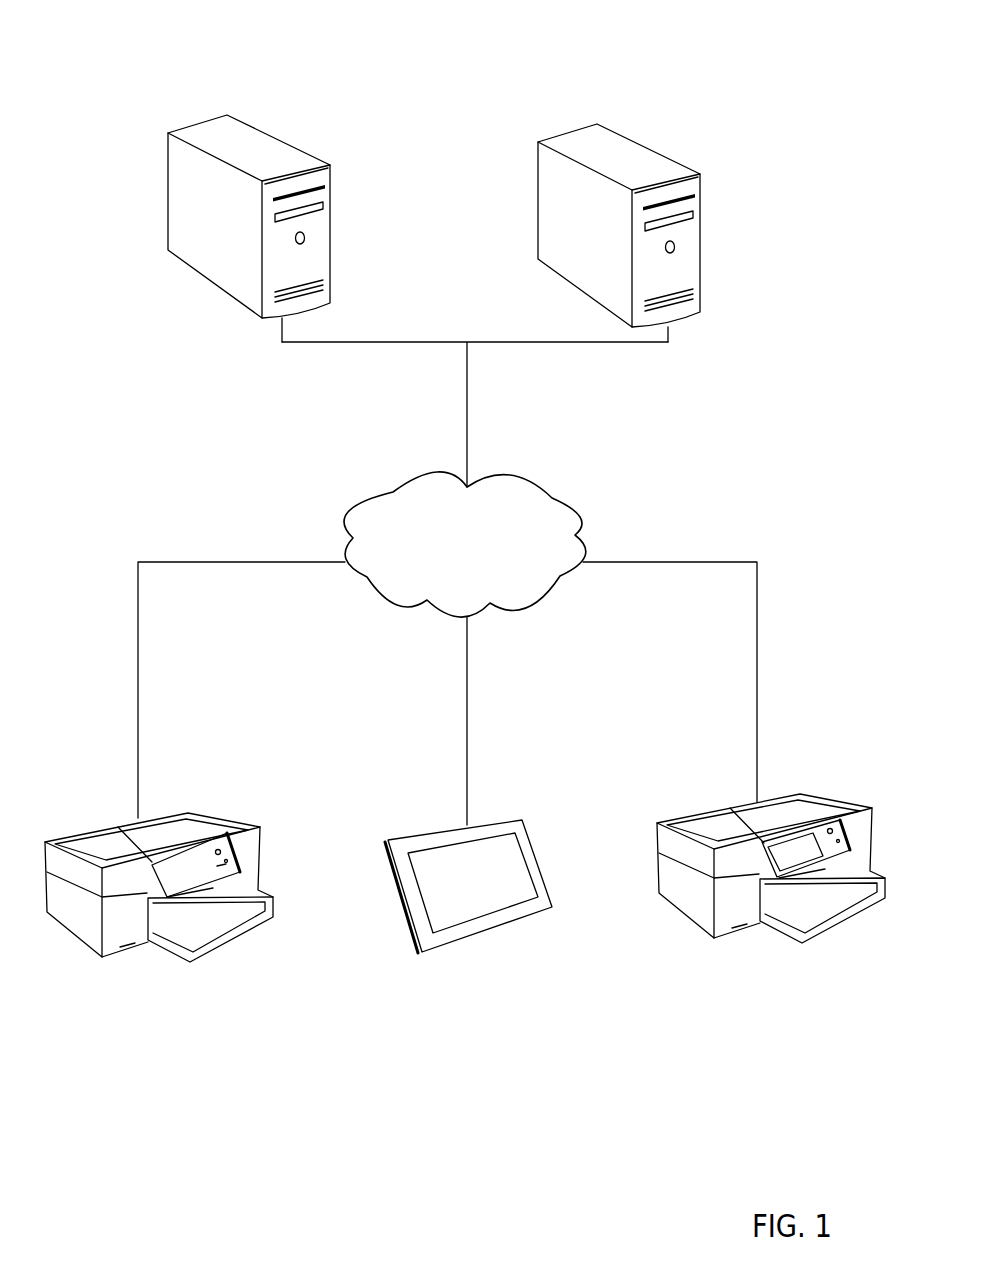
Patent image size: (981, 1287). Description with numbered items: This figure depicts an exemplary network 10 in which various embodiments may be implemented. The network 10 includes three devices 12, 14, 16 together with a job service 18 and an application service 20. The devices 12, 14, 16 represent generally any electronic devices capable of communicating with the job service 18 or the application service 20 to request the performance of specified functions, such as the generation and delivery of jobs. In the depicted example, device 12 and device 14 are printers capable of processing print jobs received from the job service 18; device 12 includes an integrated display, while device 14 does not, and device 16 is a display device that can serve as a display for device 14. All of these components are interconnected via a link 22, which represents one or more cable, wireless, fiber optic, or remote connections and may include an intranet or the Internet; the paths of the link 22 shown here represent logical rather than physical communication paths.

The network 10 is at (465, 60).
The device 12 is at (858, 823).
The device 14 is at (257, 843).
The device 16 is at (528, 833).
The job service 18 is at (262, 132).
The application service 20 is at (642, 150).
The link 22 is at (483, 482).